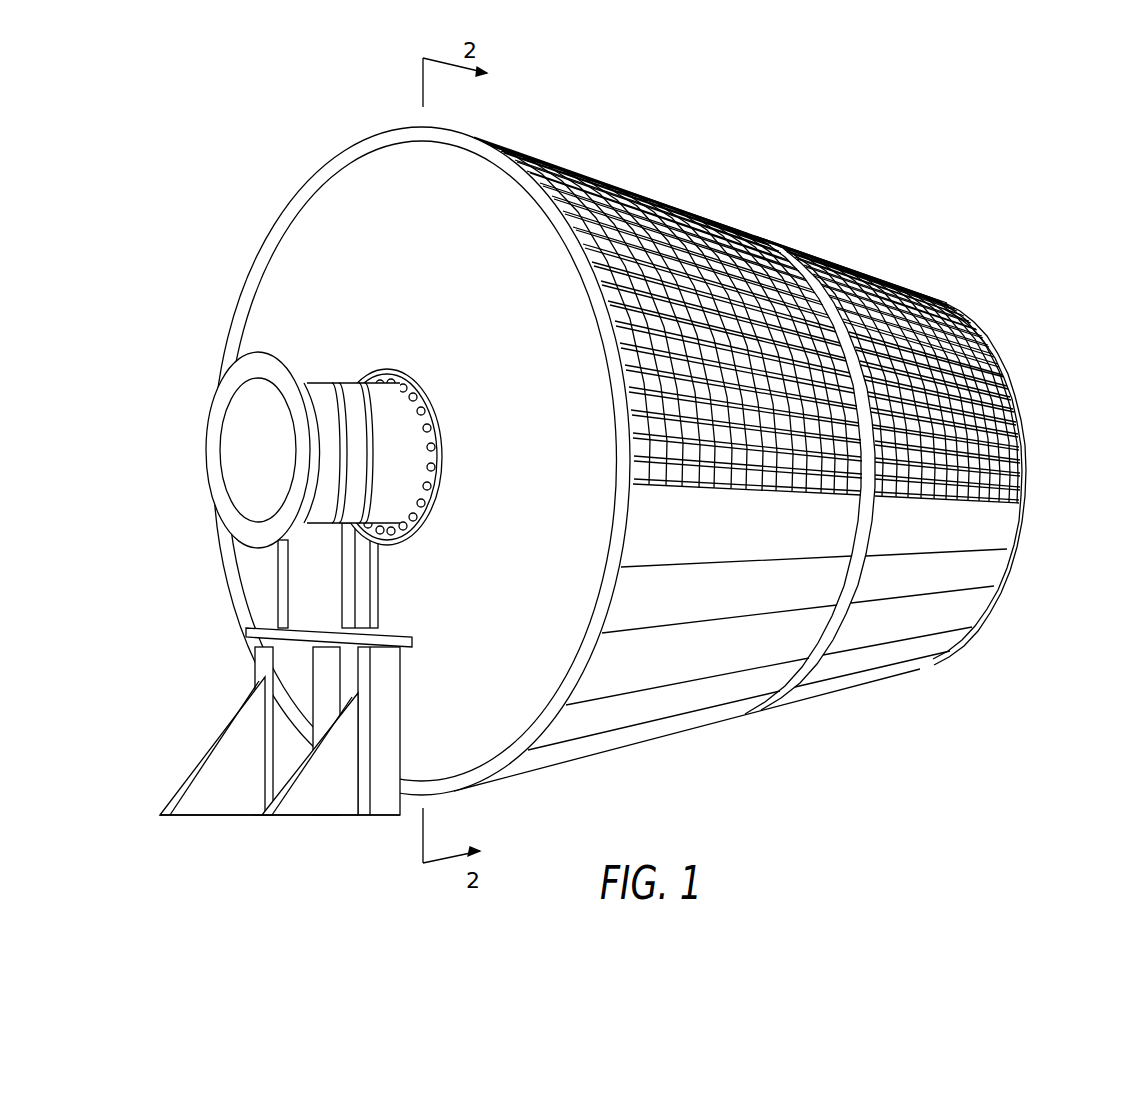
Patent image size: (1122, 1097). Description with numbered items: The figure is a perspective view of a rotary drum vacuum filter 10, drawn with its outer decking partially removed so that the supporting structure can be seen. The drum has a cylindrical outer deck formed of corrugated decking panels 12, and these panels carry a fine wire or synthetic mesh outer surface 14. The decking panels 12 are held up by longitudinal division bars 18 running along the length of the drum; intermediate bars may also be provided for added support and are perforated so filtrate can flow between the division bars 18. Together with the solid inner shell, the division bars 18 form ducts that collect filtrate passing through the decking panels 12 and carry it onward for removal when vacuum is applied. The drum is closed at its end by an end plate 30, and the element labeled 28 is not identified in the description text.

The rotary drum vacuum filter 10 is at (827, 202).
The corrugated decking panels 12 is at (690, 216).
The mesh outer surface 14 is at (975, 567).
The longitudinal division bars 18 is at (995, 393).
The hub with inlet opening 28 is at (235, 398).
The end plate 30 is at (480, 203).